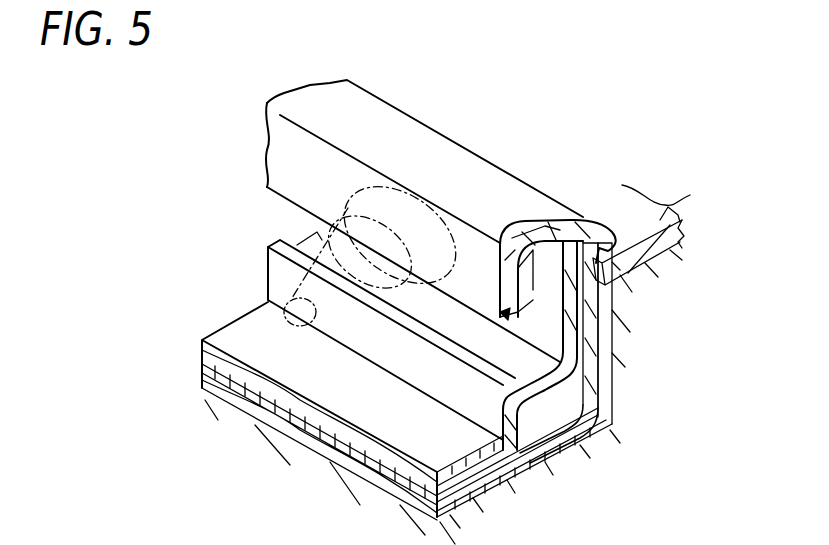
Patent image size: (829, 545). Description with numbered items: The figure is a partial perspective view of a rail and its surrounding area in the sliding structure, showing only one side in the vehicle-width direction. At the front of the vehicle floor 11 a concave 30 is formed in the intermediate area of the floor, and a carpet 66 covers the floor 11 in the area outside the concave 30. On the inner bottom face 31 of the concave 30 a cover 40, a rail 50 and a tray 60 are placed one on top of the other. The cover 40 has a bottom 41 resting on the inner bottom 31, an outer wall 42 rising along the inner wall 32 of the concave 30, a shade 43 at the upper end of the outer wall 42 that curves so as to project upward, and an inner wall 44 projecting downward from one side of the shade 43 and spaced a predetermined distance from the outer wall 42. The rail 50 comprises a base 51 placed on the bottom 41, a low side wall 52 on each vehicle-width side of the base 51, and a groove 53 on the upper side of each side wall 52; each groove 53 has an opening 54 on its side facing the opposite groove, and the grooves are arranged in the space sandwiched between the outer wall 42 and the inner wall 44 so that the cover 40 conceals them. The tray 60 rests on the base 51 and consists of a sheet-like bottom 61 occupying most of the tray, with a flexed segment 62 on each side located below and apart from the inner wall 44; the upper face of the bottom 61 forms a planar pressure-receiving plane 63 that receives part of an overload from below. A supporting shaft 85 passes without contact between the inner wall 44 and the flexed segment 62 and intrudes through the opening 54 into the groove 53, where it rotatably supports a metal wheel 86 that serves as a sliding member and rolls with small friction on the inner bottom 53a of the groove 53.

The vehicle floor 11 is at (665, 230).
The concave 30 is at (618, 365).
The inner bottom face 31 is at (557, 442).
The inner wall 32 is at (571, 365).
The cover 40 is at (433, 312).
The bottom 41 is at (517, 483).
The outer wall 42 is at (612, 390).
The shade 43 is at (433, 312).
The inner wall 44 is at (275, 148).
The rail 50 is at (301, 409).
The base 51 is at (206, 372).
The side wall 52 is at (520, 422).
The groove 53 is at (535, 321).
The inner bottom 53a is at (318, 230).
The opening 54 is at (507, 280).
The tray 60 is at (325, 333).
The bottom 61 is at (366, 333).
The flexed segment 62 is at (273, 241).
The pressure-receiving plane 63 is at (233, 342).
The carpet 66 is at (684, 202).
The supporting shaft 85 is at (342, 325).
The wheel 86 is at (356, 190).